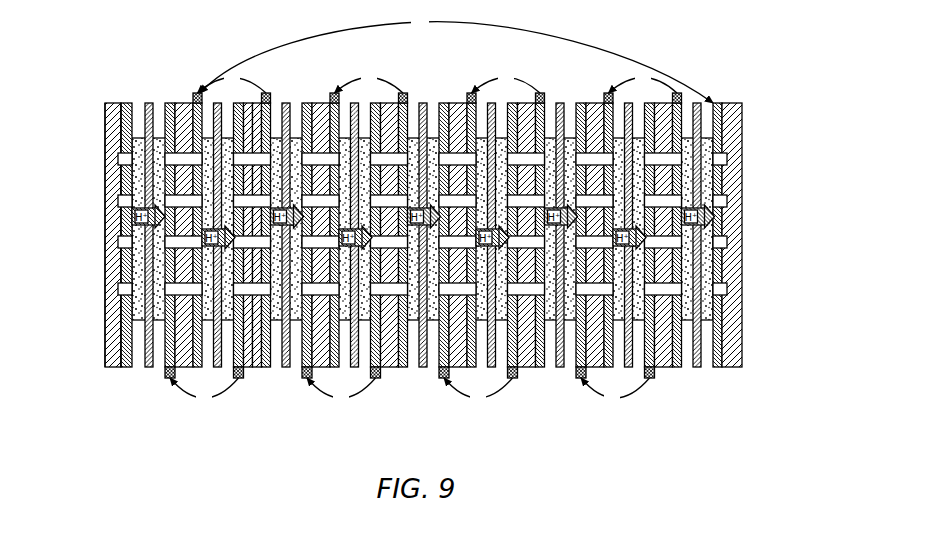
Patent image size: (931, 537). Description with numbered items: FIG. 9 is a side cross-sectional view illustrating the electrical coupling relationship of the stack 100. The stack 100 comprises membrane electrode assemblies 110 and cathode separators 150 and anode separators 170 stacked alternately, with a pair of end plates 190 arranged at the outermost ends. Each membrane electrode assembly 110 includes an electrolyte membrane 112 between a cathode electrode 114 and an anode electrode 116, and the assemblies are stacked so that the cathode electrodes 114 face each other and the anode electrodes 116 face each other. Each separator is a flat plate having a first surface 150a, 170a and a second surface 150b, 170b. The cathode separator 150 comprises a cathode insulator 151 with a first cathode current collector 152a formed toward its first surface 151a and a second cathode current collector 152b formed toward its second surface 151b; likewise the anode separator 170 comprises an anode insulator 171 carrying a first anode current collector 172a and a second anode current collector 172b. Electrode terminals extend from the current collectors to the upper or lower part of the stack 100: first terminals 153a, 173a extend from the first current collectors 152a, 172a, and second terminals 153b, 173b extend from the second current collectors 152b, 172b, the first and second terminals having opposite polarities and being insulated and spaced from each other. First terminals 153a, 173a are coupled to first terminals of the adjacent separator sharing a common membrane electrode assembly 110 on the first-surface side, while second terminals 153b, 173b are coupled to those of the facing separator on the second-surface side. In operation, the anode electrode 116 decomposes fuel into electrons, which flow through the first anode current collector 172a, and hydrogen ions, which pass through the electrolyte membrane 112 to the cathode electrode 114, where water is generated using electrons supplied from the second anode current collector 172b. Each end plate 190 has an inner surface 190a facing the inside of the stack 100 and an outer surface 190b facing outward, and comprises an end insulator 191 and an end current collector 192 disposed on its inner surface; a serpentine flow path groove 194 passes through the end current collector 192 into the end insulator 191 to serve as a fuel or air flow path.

The stack 100 is at (413, 227).
The membrane electrode assembly 110 is at (376, 232).
The electrolyte membrane 112 is at (354, 104).
The cathode electrode 114 is at (347, 104).
The anode electrode 116 is at (337, 62).
The cathode separator 150 is at (373, 245).
The first surface of cathode separator 150a is at (442, 104).
The second surface of cathode separator 150b is at (467, 104).
The cathode insulator 151 is at (312, 369).
The first surface of cathode insulator 151a is at (309, 103).
The second surface of cathode insulator 151b is at (325, 103).
The first cathode current collector 152a is at (305, 378).
The second cathode current collector 152b is at (332, 369).
The first terminal of cathode separator 153a is at (446, 379).
The second terminal of cathode separator 153b is at (470, 95).
The anode separator 170 is at (464, 247).
The first surface of anode separator 170a is at (511, 104).
The second surface of anode separator 170b is at (548, 104).
The anode insulator 171 is at (382, 369).
The first anode current collector 172a is at (374, 378).
The second anode current collector 172b is at (402, 369).
The first terminal of anode separator 173a is at (514, 379).
The second terminal of anode separator 173b is at (539, 95).
The end plate 190 is at (389, 239).
The inner surface of end plate 190a is at (129, 103).
The outer surface of end plate 190b is at (111, 103).
The end insulator 191 is at (112, 218).
The end current collector 192 is at (124, 258).
The flow path groove 194 is at (118, 156).